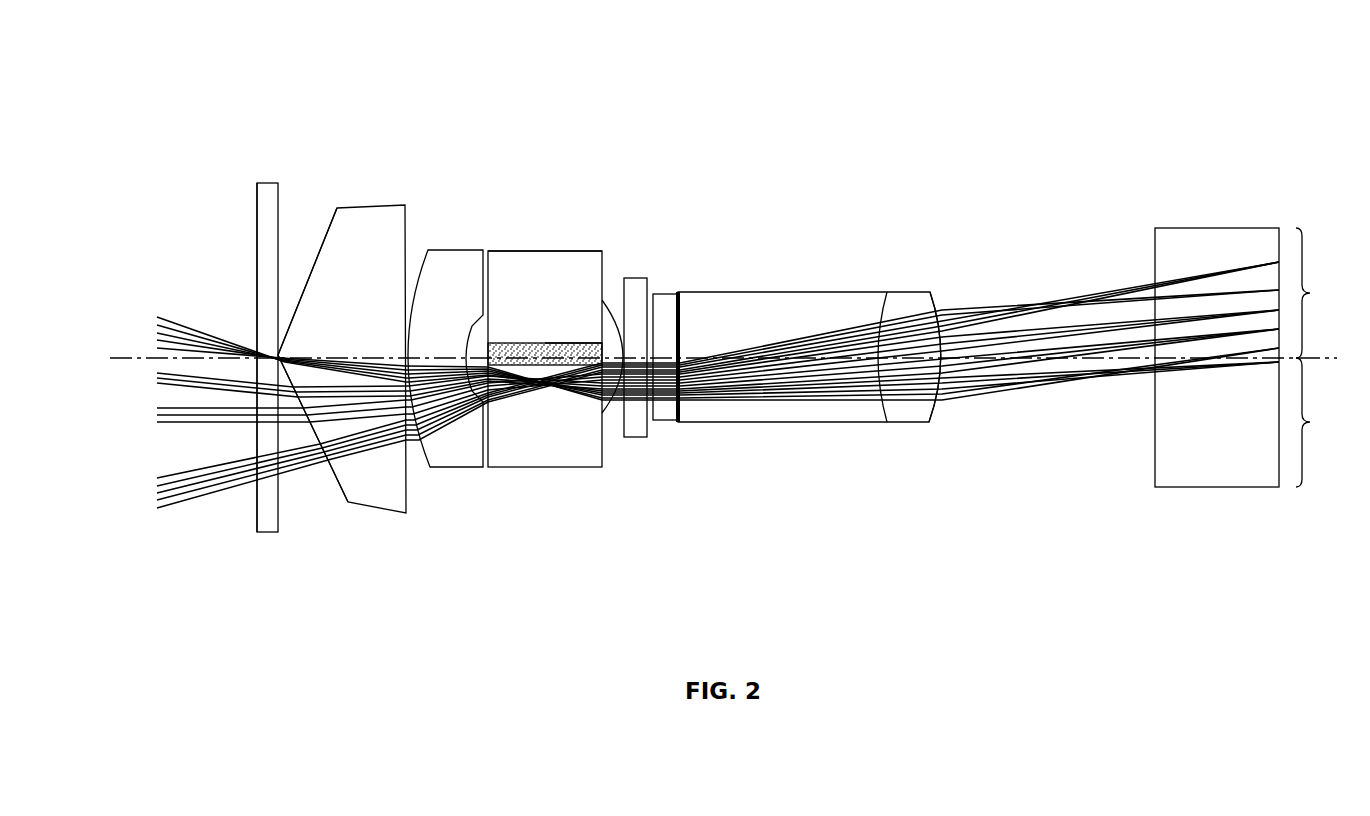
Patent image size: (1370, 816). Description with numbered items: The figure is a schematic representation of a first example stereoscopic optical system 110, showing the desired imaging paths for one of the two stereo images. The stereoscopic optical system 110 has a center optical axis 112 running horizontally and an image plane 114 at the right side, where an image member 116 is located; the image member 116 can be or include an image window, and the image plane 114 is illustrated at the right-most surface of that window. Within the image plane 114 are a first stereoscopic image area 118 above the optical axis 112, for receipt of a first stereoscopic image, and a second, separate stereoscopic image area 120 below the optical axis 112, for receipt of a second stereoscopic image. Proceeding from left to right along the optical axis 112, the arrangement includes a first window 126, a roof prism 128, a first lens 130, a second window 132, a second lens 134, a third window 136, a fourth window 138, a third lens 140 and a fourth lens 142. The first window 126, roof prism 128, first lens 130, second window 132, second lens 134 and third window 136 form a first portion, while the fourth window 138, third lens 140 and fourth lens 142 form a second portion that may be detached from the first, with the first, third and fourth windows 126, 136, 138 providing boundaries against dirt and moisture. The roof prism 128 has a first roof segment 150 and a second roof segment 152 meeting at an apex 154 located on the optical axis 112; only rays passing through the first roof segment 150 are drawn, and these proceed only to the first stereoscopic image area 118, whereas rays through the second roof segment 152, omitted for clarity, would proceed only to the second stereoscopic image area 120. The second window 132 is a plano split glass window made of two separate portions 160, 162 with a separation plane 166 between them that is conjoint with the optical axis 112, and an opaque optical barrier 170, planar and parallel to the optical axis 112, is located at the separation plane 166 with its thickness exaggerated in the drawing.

The stereoscopic optical system 110 is at (405, 58).
The center optical axis 112 is at (122, 358).
The image plane 114 is at (1284, 220).
The image member 116 is at (1193, 227).
The first stereoscopic image area 118 is at (1326, 293).
The second stereoscopic image area 120 is at (1326, 422).
The first window 126 is at (266, 192).
The roof prism 128 is at (372, 217).
The first lens 130 is at (460, 262).
The second window 132 is at (544, 268).
The second lens 134 is at (607, 327).
The third window 136 is at (633, 320).
The fourth window 138 is at (664, 318).
The third lens 140 is at (783, 300).
The fourth lens 142 is at (900, 312).
The first roof segment 150 is at (333, 487).
The second roof segment 152 is at (330, 221).
The apex 154 is at (252, 342).
The first portion of second window 160 is at (543, 457).
The second portion of second window 162 is at (525, 268).
The separation plane 166 is at (583, 347).
The opaque optical barrier 170 is at (533, 340).